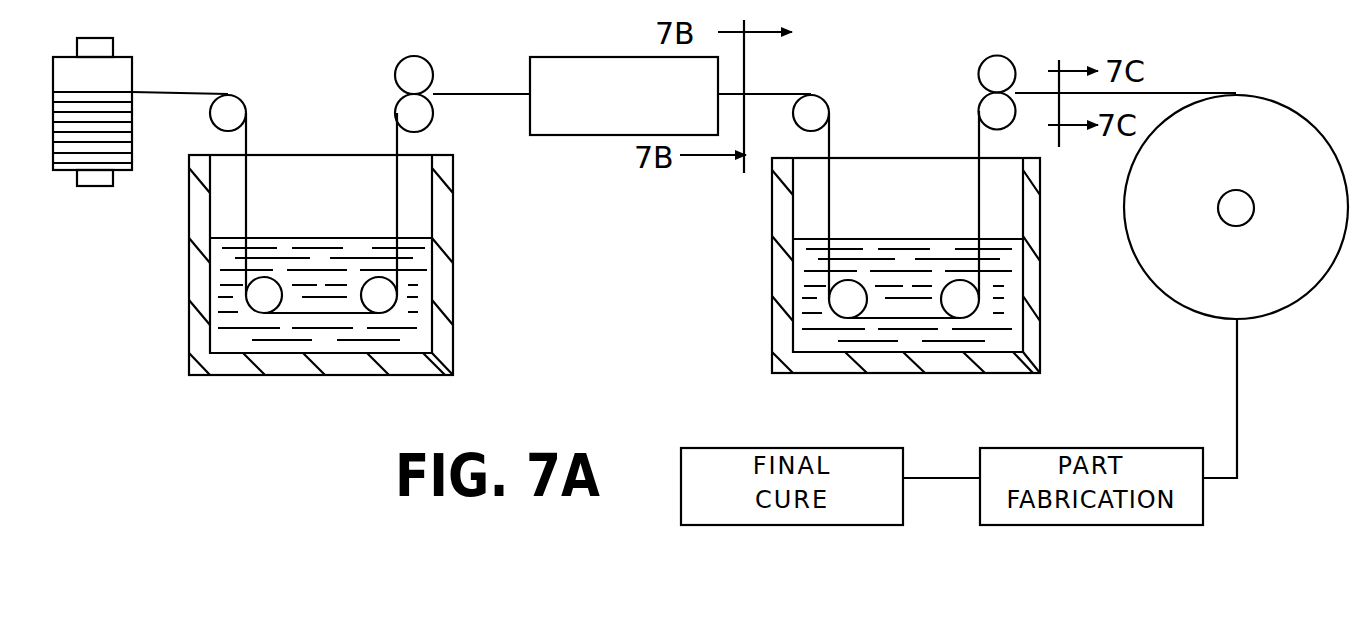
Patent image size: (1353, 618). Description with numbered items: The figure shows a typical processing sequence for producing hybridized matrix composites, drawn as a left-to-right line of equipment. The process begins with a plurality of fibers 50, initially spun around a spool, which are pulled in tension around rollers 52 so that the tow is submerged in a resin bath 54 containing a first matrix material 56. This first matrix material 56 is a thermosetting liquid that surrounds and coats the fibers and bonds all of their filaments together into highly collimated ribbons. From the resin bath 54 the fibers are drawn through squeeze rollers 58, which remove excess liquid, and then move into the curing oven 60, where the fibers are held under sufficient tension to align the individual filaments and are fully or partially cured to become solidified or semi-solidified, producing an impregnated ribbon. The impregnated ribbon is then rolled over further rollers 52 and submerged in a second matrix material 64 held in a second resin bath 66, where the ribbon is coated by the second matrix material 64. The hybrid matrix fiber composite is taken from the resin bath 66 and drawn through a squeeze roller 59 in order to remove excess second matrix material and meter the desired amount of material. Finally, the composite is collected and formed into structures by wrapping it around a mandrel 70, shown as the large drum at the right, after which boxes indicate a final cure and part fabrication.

The fibers 50 is at (132, 70).
The rollers 52 is at (243, 94).
The resin bath 54 is at (300, 217).
The first matrix material 56 is at (320, 337).
The squeeze rollers 58 is at (404, 57).
The curing oven 60 is at (576, 135).
The second matrix material 64 is at (923, 340).
The resin bath 66 is at (878, 226).
The squeeze roller 59 is at (1010, 58).
The mandrel 70 is at (1253, 159).